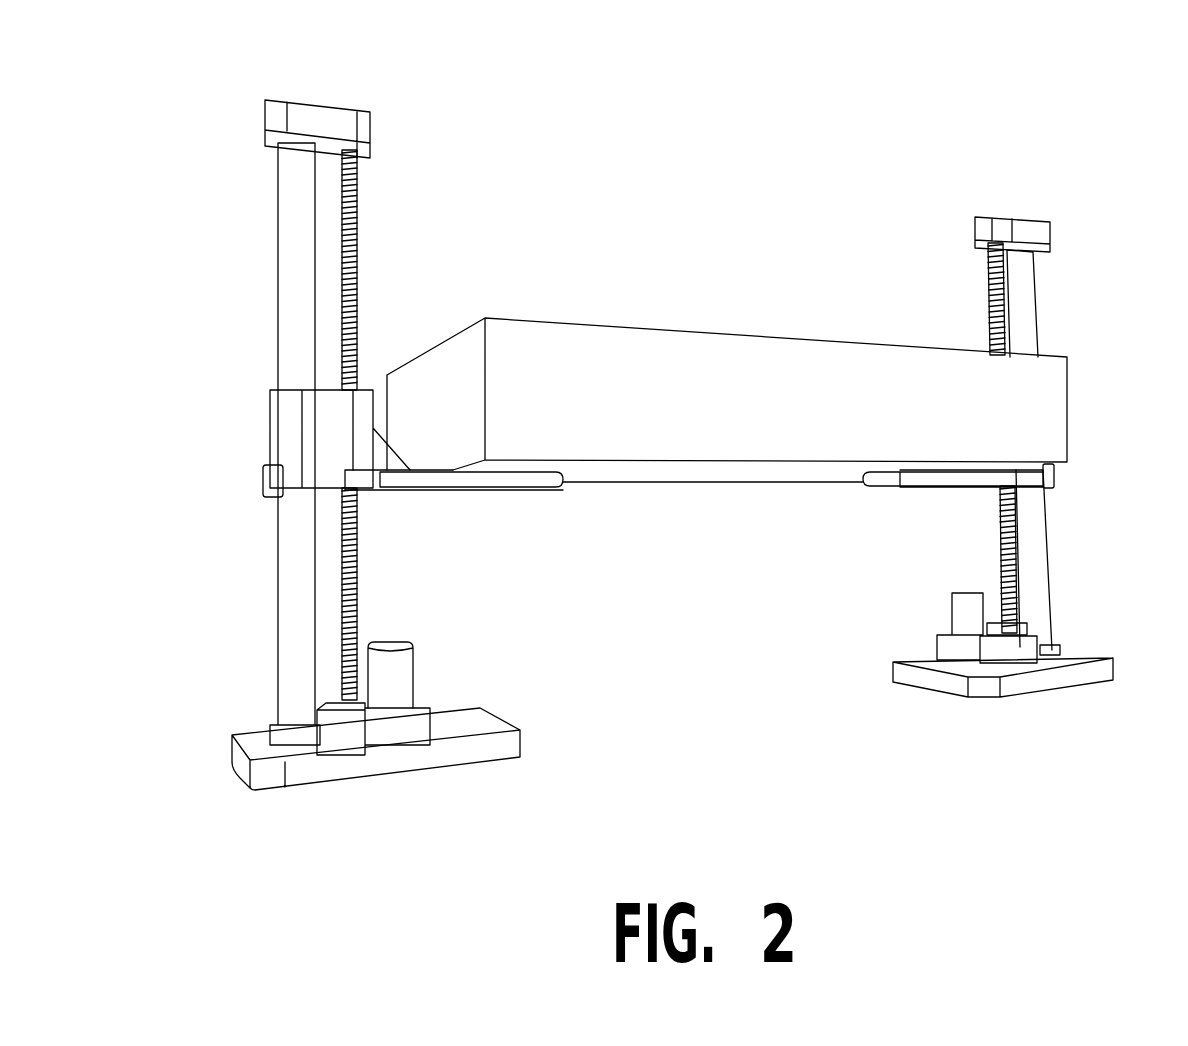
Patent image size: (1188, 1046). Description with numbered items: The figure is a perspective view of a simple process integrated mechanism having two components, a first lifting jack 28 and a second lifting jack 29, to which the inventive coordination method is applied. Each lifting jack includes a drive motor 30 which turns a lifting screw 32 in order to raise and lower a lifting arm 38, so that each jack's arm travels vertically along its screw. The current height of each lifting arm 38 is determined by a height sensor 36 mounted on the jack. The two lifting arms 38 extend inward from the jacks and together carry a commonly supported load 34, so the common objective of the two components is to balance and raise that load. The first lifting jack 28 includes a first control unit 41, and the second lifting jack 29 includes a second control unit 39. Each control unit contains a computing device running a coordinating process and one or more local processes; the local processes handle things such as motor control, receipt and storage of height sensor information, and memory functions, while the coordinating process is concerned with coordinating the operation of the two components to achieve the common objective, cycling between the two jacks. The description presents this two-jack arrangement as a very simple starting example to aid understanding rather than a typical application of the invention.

The first lifting jack 28 is at (273, 115).
The second lifting jack 29 is at (1027, 225).
The lifting screw 32 is at (358, 220).
The commonly supported load 34 is at (738, 343).
The height sensor 36 is at (265, 500).
The lifting arm 38 is at (498, 489).
The second control unit 39 is at (995, 627).
The drive motor 30 is at (397, 660).
The first control unit 41 is at (317, 713).